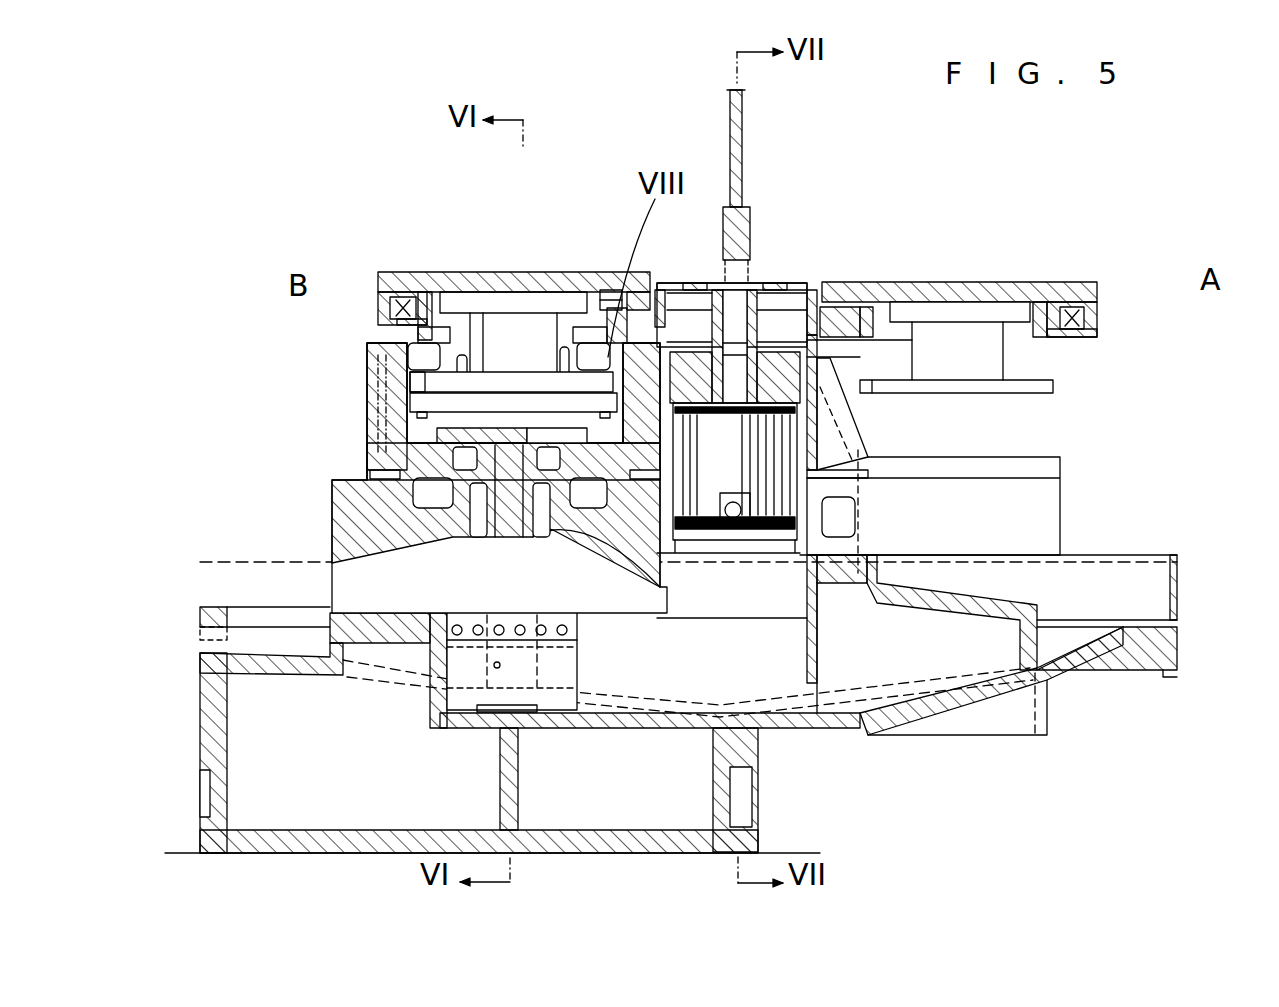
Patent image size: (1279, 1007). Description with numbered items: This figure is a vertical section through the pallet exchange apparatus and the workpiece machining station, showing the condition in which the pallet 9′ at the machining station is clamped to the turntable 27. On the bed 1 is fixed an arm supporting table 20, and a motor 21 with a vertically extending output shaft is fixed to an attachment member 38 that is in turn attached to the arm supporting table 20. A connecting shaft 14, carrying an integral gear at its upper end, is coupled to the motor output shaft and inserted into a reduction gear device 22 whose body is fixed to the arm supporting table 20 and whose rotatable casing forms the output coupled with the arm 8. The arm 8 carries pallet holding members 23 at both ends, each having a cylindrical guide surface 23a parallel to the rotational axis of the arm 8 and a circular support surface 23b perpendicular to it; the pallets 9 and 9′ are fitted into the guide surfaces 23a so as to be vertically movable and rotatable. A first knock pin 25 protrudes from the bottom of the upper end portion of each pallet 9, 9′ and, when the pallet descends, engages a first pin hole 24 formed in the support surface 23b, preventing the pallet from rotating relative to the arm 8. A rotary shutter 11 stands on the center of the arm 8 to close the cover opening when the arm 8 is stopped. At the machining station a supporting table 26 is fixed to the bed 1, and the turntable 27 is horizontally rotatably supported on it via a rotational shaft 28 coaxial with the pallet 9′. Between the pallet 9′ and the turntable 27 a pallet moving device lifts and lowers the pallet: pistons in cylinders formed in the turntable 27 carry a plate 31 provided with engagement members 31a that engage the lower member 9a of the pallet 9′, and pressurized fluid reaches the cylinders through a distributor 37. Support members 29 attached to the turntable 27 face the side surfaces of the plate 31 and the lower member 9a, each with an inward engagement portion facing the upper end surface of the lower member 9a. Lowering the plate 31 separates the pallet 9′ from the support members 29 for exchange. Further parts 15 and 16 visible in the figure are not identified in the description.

The bed 1 is at (1170, 645).
The arm 8 is at (840, 323).
The pallet 9 is at (980, 287).
The pallet 9′ is at (513, 277).
The lower member 9a is at (482, 377).
The rotary shutter 11 is at (730, 143).
The connecting shaft 14 is at (737, 360).
The bearing hub 15 is at (740, 280).
The cylinder 16 is at (680, 283).
The arm supporting table 20 is at (1053, 490).
The motor 21 is at (707, 480).
The reduction gear device 22 is at (783, 283).
The pallet holding member 23 is at (613, 283).
The cylindrical guide surface 23a is at (438, 280).
The circular support surface 23b is at (627, 283).
The first pin hole 24 is at (403, 325).
The first knock pin 25 is at (418, 277).
The supporting table 26 is at (340, 535).
The turntable 27 is at (400, 483).
The rotational shaft 28 is at (497, 572).
The support member 29 is at (373, 430).
The plate 31 is at (413, 403).
The engagement member 31a is at (413, 383).
The distributor 37 is at (473, 697).
The attachment member 38 is at (797, 405).